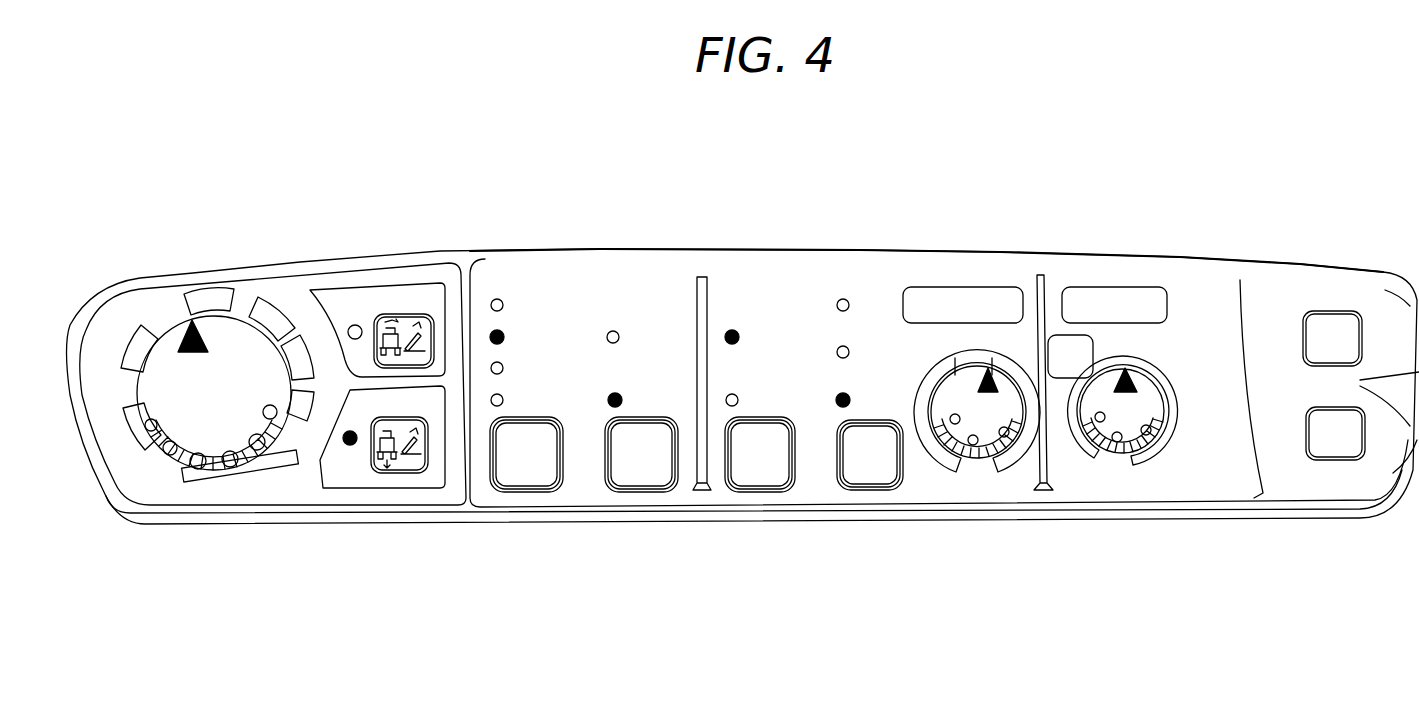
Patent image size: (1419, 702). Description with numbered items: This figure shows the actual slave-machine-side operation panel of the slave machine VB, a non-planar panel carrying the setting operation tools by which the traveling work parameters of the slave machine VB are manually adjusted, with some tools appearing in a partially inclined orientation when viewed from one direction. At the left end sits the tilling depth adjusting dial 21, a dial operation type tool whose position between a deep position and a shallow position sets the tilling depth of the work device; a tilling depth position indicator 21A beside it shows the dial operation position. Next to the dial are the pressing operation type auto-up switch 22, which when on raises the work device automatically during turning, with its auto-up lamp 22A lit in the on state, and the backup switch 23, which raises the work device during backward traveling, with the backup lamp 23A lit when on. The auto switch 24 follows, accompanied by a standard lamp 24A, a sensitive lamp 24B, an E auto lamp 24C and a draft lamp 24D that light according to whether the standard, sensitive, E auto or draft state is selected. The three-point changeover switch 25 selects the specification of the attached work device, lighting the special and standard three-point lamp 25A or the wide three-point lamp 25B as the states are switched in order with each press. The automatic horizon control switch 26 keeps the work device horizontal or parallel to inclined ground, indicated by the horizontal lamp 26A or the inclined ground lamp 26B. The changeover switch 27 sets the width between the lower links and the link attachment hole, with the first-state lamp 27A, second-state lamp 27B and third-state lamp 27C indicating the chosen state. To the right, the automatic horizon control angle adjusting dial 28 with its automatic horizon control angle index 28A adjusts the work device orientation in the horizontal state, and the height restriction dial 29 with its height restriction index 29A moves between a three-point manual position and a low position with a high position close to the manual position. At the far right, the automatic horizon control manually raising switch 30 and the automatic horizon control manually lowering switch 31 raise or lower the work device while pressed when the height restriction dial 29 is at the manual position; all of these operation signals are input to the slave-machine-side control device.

The slave machine VB is at (1307, 172).
The tilling depth adjusting dial 21 is at (183, 468).
The tilling depth position indicator 21A is at (198, 302).
The auto-up switch 22 is at (418, 320).
The auto-up lamp 22A is at (355, 325).
The backup switch 23 is at (394, 472).
The backup lamp 23A is at (350, 446).
The auto switch 24 is at (537, 484).
The standard lamp 24A is at (497, 299).
The sensitive lamp 24B is at (492, 333).
The E auto lamp 24C is at (495, 374).
The draft lamp 24D is at (496, 406).
The 3P changeover switch 25 is at (660, 490).
The special 3P and standard 3P lamp 25A is at (616, 331).
The W3P lamp 25B is at (612, 394).
The automatic horizon control switch 26 is at (773, 490).
The horizontal lamp 26A is at (733, 331).
The inclined ground lamp 26B is at (730, 394).
The changeover switch 27 is at (877, 490).
The 1 lamp 27A is at (845, 299).
The 2 lamp 27B is at (840, 347).
The 3 lamp 27C is at (843, 407).
The automatic horizon control angle adjusting dial 28 is at (983, 425).
The automatic horizon control angle index 28A is at (1005, 370).
The height restriction dial 29 is at (1146, 403).
The height restriction index 29A is at (1145, 365).
The automatic horizon control manually raising switch 30 is at (1330, 322).
The automatic horizon control manually lowering switch 31 is at (1345, 447).